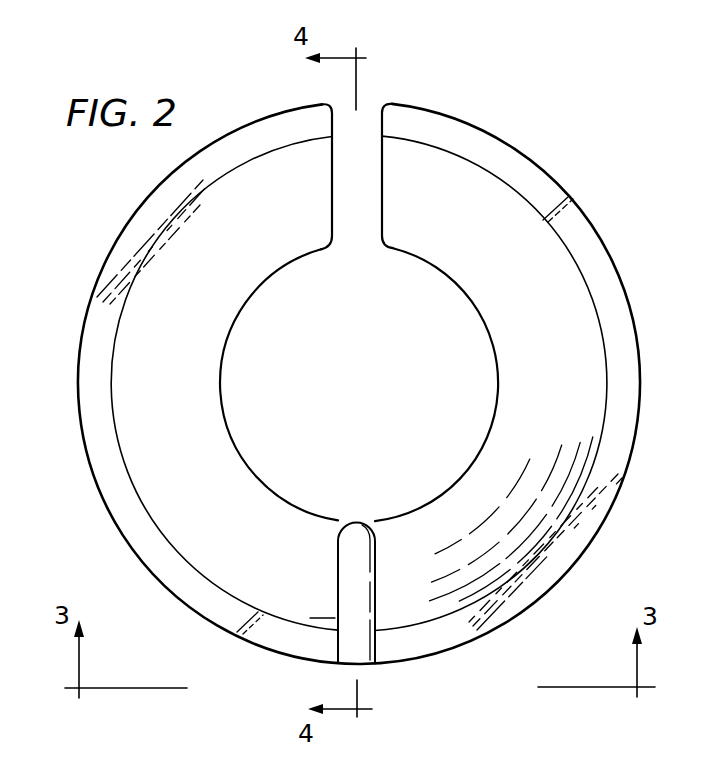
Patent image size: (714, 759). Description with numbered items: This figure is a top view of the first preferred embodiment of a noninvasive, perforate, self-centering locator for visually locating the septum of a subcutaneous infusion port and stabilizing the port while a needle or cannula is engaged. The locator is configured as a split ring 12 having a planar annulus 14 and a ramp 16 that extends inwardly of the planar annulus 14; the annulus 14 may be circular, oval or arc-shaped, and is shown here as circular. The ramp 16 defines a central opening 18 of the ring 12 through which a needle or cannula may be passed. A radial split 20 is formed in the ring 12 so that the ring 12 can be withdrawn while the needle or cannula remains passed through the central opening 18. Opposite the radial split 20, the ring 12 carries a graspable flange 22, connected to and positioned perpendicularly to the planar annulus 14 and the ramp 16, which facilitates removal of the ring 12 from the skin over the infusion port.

The split ring 12 is at (438, 112).
The planar annulus 14 is at (490, 150).
The ramp 16 is at (493, 217).
The central opening 18 is at (252, 441).
The radial split 20 is at (354, 225).
The graspable flange 22 is at (377, 622).